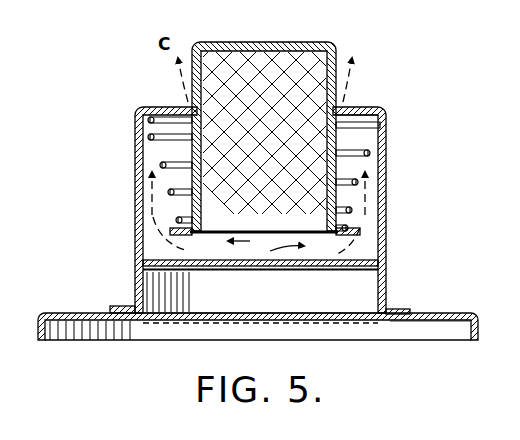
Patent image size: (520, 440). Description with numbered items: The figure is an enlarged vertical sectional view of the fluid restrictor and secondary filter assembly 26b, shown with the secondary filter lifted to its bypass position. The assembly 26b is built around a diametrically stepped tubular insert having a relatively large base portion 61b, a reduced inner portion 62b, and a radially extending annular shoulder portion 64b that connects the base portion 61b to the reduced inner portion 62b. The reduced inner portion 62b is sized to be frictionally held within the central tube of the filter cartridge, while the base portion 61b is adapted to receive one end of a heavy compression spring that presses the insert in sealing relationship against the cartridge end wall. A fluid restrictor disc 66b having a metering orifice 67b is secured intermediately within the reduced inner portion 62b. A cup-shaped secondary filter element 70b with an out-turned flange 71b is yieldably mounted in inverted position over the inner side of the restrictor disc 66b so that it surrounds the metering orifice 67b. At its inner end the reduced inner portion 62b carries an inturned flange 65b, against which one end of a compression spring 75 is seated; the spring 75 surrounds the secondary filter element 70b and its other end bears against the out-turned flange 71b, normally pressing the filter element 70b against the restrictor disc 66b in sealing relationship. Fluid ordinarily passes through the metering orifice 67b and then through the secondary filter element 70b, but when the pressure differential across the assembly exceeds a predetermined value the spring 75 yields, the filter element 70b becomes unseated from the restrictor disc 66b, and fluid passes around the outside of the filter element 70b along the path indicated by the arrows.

The base portion 61b is at (480, 320).
The annular shoulder portion 64b is at (420, 318).
The reduced inner portion 62b is at (386, 160).
The inturned flange 65b is at (360, 116).
The fluid restrictor and secondary filter assembly 26b is at (398, 277).
The secondary filter element 70b is at (338, 48).
The compression spring 75 is at (370, 153).
The out-turned flange 71b is at (358, 233).
The fluid restrictor disc 66b is at (297, 280).
The metering orifice 67b is at (257, 258).